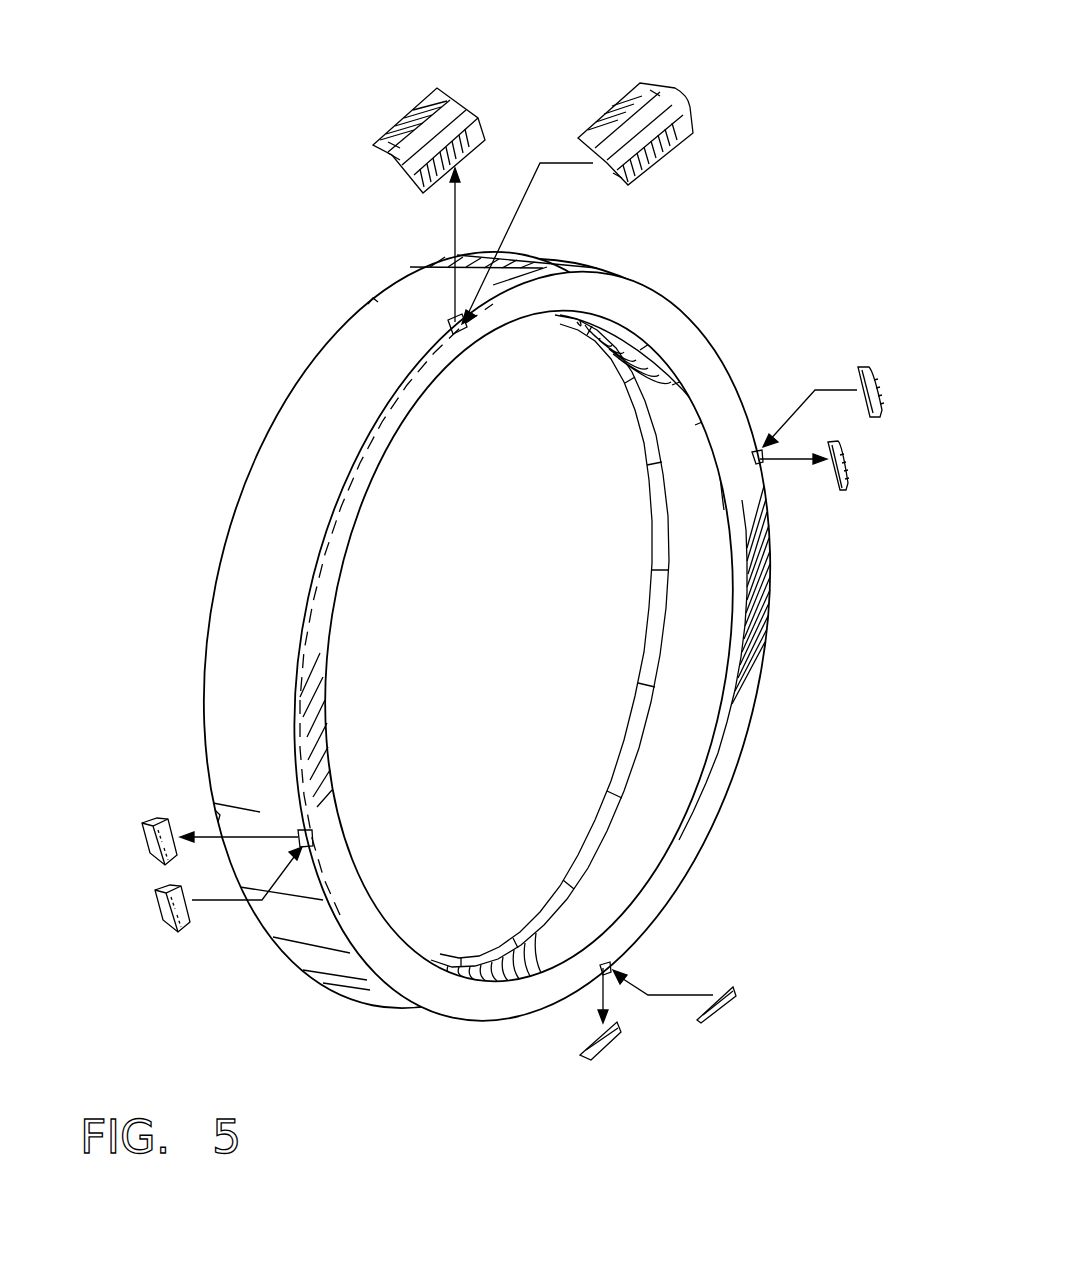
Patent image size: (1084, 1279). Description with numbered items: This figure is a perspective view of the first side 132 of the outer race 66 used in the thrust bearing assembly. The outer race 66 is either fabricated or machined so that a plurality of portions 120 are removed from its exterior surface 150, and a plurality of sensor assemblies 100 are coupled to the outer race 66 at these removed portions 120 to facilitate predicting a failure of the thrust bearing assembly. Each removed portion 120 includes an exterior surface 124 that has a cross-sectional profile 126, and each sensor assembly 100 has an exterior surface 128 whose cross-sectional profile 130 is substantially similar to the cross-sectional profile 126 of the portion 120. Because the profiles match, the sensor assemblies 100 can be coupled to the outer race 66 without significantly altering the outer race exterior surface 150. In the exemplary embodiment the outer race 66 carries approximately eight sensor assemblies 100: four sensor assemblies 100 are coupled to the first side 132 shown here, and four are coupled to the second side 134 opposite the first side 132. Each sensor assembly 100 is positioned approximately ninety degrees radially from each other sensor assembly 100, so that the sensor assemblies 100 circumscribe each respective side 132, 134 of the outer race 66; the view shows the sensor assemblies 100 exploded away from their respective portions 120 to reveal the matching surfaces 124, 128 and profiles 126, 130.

The outer race 66 is at (469, 637).
The sensor assembly 100 is at (510, 535).
The portion 120 is at (494, 573).
The exterior surface 124 is at (388, 142).
The cross-sectional profile 126 is at (388, 153).
The exterior surface 128 is at (613, 173).
The cross-sectional profile 130 is at (650, 90).
The first side 132 is at (273, 943).
The second side 134 is at (363, 897).
The exterior surface 150 is at (225, 697).